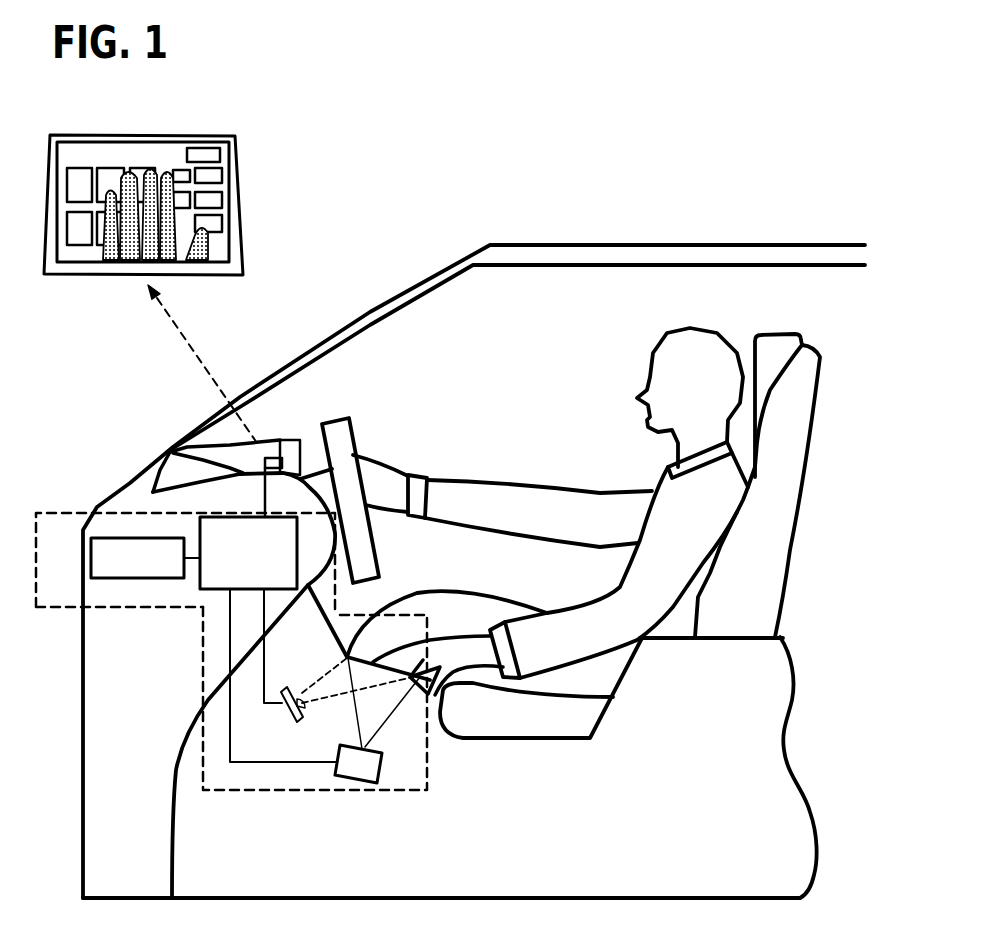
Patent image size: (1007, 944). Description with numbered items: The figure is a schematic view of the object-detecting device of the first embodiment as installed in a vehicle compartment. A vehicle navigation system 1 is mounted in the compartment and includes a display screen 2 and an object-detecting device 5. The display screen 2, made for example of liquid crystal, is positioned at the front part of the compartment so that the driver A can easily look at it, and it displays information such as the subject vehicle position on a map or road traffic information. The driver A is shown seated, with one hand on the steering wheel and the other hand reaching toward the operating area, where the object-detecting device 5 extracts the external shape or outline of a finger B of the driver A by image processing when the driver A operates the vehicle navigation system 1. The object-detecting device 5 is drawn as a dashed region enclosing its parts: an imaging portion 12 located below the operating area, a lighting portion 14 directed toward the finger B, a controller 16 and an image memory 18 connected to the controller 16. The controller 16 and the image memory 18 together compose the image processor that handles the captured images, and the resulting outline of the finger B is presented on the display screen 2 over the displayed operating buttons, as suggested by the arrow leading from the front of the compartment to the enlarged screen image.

The vehicle navigation system 1 is at (227, 445).
The display screen 2 is at (290, 447).
The object-detecting device 5 is at (63, 607).
The imaging portion 12 is at (378, 770).
The lighting portion 14 is at (284, 690).
The controller 16 is at (218, 590).
The image memory 18 is at (130, 538).
The driver A is at (657, 337).
The finger B is at (403, 663).